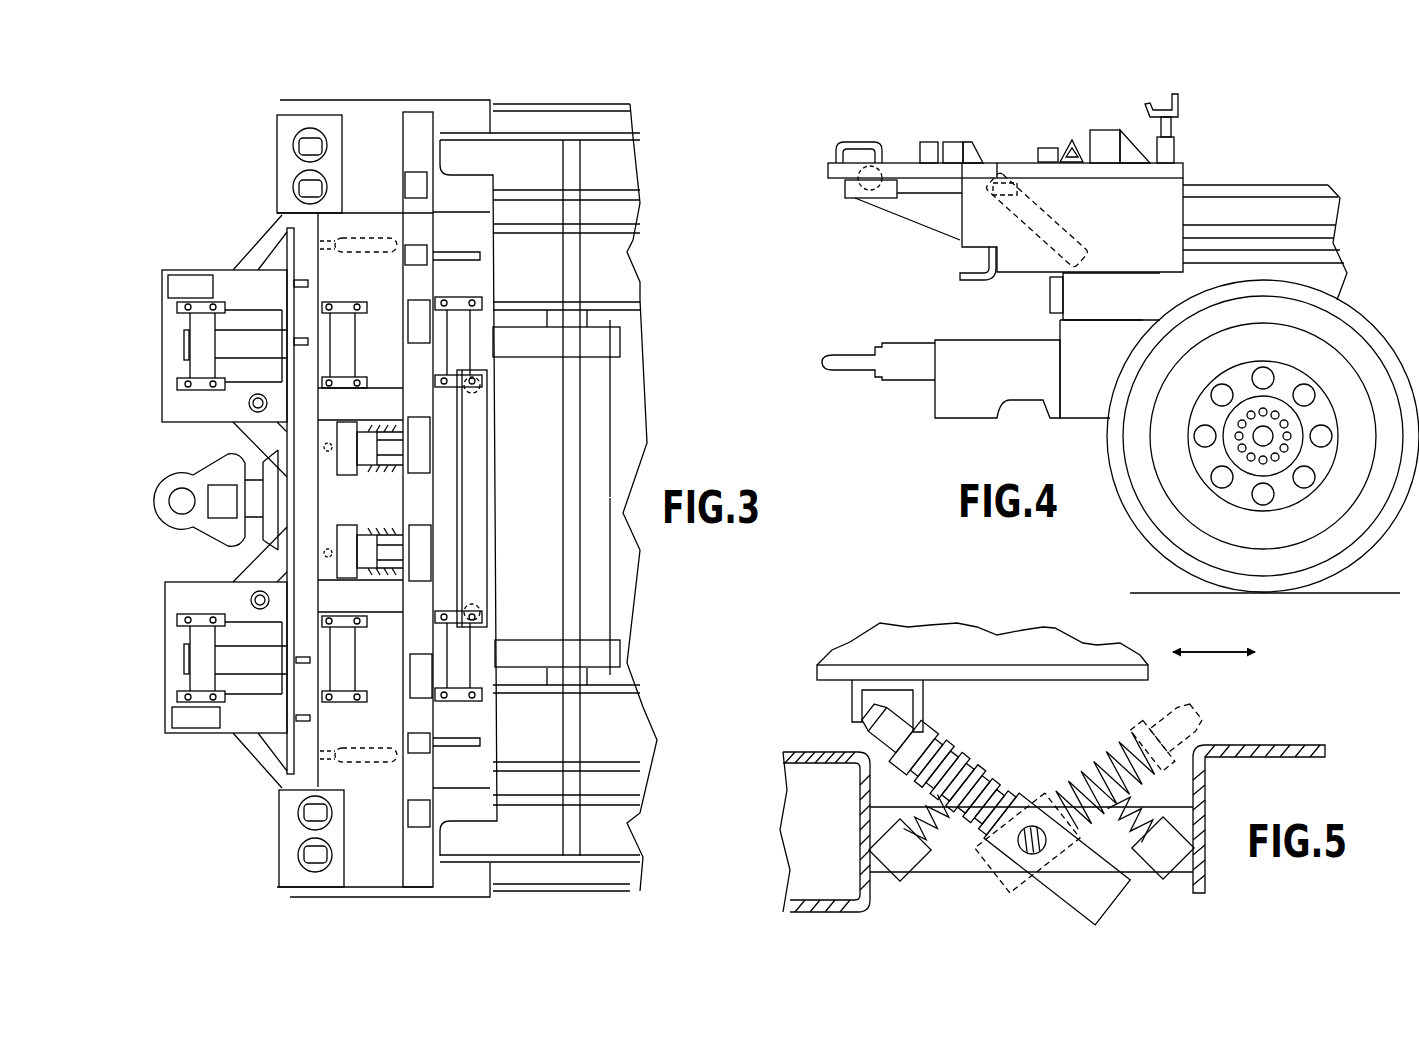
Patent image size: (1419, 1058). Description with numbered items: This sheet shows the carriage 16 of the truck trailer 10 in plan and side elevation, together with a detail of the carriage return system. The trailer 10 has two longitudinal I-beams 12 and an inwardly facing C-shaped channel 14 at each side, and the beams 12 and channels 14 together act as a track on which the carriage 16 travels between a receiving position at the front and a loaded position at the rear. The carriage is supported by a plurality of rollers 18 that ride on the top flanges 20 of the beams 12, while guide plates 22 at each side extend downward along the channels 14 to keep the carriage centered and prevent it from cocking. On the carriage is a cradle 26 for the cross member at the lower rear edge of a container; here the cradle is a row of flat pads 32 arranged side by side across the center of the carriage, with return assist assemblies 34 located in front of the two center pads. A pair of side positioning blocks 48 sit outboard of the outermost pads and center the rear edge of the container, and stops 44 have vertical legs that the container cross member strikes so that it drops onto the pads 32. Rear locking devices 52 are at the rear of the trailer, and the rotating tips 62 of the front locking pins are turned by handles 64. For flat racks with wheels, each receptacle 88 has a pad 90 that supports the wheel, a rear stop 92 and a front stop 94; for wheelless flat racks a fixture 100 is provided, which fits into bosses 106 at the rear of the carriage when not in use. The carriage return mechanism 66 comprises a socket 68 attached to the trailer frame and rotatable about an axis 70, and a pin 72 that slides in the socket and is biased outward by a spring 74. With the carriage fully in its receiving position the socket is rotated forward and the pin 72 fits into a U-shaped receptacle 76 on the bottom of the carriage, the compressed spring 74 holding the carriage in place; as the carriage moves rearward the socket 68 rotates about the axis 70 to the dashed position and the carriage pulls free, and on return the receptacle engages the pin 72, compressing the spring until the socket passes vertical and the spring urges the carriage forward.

In FIG. 4, the truck trailer 10 is at (1312, 170).
In FIG. 3, the I-beam 12 is at (598, 326).
In FIG. 3, the C-shaped channel 14 is at (547, 107).
In FIG. 4, the C-shaped channel 14 is at (1336, 212).
In FIG. 3, the carriage 16 is at (372, 902).
In FIG. 4, the carriage 16 is at (1185, 178).
In FIG. 3, the roller 18 is at (195, 368).
In FIG. 3, the top flange 20 is at (620, 340).
In FIG. 4, the guide plate 22 is at (1115, 255).
In FIG. 3, the cradle 26 is at (499, 520).
In FIG. 3, the flat pad 32 is at (416, 294).
In FIG. 3, the return assist assembly 34 is at (380, 462).
In FIG. 3, the stop 44 is at (420, 243).
In FIG. 3, the side positioning block 48 is at (410, 170).
In FIG. 3, the rear locking device 52 is at (273, 130).
In FIG. 3, the rotating tip 62 is at (293, 183).
In FIG. 4, the handle 64 is at (963, 278).
In FIG. 4, the carriage return mechanism 66 is at (1062, 220).
In FIG. 5, the carriage return mechanism 66 is at (1048, 762).
In FIG. 5, the socket 68 is at (1057, 859).
In FIG. 5, the axis 70 is at (1031, 839).
In FIG. 5, the pin 72 is at (887, 726).
In FIG. 5, the spring 74 is at (953, 778).
In FIG. 5, the U-shaped receptacle 76 is at (853, 705).
In FIG. 3, the receptacle 88 is at (230, 295).
In FIG. 4, the receptacle 88 is at (907, 143).
In FIG. 3, the pad 90 is at (263, 283).
In FIG. 3, the rear stop 92 is at (297, 267).
In FIG. 3, the front stop 94 is at (183, 272).
In FIG. 4, the front stop 94 is at (862, 143).
In FIG. 4, the fixture 100 is at (1158, 100).
In FIG. 4, the boss 106 is at (1178, 146).